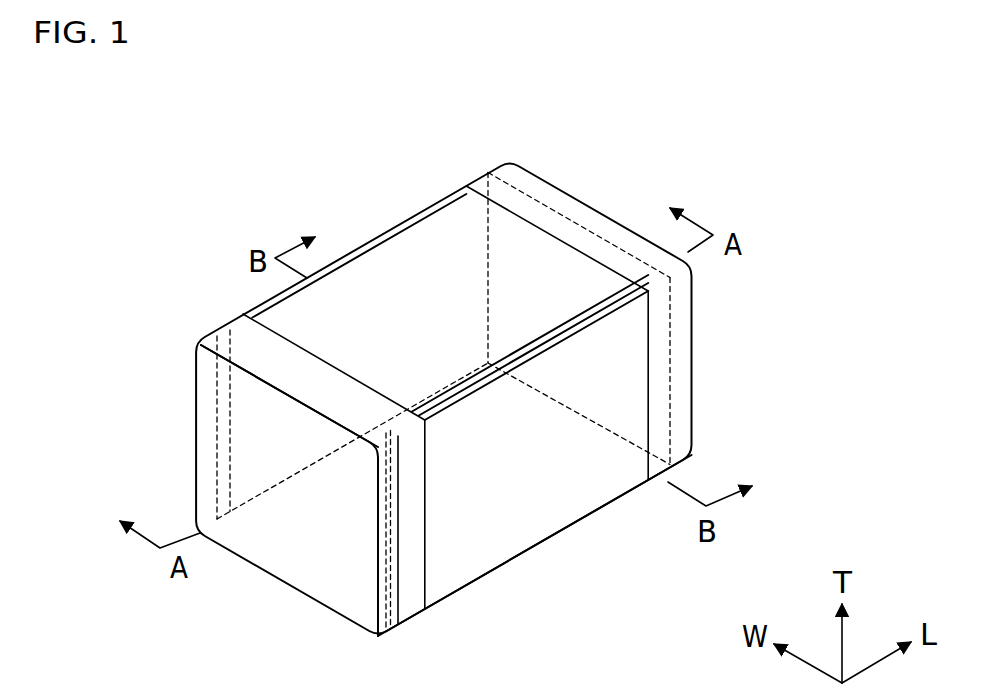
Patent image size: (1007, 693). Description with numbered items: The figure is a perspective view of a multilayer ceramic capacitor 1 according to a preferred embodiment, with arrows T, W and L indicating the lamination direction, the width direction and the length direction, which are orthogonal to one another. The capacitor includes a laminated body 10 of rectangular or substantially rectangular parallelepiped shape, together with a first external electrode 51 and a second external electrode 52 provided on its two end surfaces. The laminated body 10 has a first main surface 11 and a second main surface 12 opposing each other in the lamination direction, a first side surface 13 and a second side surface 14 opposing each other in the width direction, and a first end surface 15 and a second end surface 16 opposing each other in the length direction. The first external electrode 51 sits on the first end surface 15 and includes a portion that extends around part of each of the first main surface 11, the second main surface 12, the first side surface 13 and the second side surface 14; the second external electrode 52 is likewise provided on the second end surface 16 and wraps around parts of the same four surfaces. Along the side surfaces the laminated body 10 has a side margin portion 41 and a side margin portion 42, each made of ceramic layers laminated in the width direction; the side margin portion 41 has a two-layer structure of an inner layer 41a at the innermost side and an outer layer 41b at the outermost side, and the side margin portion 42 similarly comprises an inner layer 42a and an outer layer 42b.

The multilayer ceramic capacitor 1 is at (202, 200).
The laminated body 10 is at (453, 232).
The first main surface 11 is at (478, 292).
The second main surface 12 is at (460, 543).
The first side surface 13 is at (403, 298).
The second side surface 14 is at (542, 487).
The first end surface 15 is at (302, 525).
The second end surface 16 is at (568, 283).
The side margin portion 41 is at (241, 449).
The inner layer 41a is at (235, 319).
The outer layer 41b is at (258, 302).
The side margin portion 42 is at (650, 333).
The inner layer 42a is at (650, 300).
The outer layer 42b is at (585, 329).
The first external electrode 51 is at (210, 407).
The second external electrode 52 is at (683, 387).